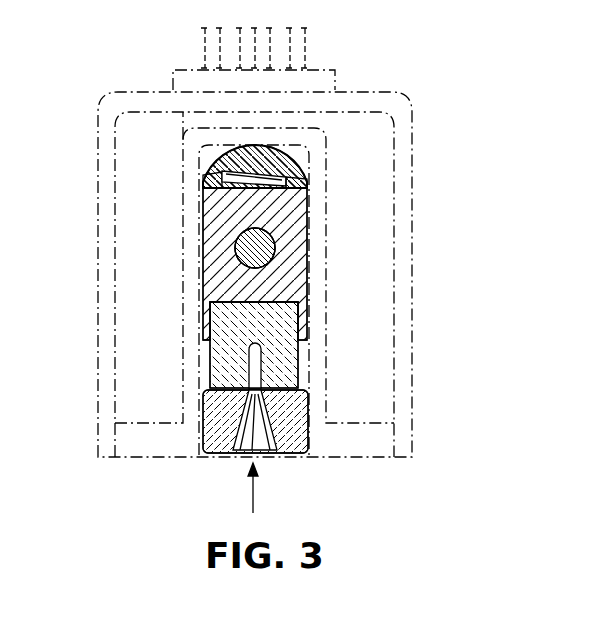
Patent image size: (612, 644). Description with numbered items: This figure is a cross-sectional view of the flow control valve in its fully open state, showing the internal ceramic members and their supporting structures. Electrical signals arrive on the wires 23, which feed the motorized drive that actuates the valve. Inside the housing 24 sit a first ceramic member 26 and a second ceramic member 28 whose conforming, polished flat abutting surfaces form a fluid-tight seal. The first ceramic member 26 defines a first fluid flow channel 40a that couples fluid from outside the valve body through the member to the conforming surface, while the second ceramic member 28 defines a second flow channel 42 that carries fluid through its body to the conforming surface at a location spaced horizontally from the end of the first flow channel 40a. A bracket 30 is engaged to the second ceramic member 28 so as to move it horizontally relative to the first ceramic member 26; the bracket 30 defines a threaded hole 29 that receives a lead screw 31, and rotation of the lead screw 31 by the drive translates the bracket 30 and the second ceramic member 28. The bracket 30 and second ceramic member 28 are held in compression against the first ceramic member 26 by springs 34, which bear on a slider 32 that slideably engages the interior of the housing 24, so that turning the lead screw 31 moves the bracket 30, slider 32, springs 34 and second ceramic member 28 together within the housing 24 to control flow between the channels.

The wires 23 is at (309, 35).
The housing 24 is at (126, 92).
The first ceramic member 26 is at (217, 452).
The second ceramic member 28 is at (210, 360).
The threaded hole 29 is at (238, 250).
The bracket 30 is at (300, 219).
The lead screw 31 is at (262, 250).
The slider 32 is at (222, 176).
The springs 34 is at (303, 172).
The first fluid flow channel 40a is at (262, 446).
The second flow channel 42 is at (262, 372).